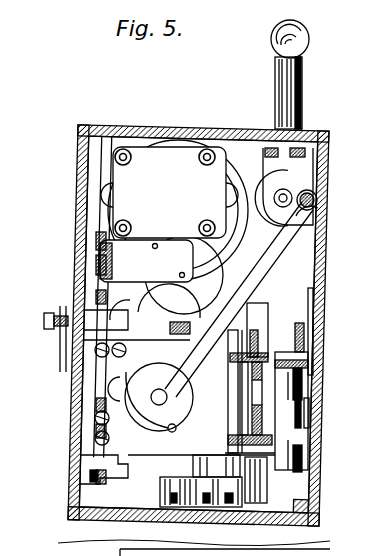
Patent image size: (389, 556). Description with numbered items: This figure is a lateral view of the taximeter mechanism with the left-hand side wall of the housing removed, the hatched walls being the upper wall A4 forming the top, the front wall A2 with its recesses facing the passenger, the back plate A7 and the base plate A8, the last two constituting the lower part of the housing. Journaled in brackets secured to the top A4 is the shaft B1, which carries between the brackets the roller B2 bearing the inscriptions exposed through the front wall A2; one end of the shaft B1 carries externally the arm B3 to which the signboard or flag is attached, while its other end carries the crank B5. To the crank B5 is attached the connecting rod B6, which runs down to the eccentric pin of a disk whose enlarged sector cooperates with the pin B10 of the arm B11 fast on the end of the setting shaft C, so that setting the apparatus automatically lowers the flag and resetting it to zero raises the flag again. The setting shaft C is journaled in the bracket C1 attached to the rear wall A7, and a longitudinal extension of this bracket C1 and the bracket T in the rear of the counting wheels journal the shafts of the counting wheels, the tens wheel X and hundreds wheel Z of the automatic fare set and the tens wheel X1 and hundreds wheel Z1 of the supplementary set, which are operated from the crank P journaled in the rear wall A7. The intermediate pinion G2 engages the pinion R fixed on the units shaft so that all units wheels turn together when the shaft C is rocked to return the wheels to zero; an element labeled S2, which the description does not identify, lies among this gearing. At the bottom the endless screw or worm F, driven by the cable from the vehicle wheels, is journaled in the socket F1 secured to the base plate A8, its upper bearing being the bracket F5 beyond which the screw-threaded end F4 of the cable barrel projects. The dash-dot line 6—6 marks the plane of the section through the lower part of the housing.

The upper wall A4 is at (205, 129).
The back plate A7 is at (73, 177).
The front wall A2 is at (325, 245).
The base plate A8 is at (94, 523).
The arm B3 is at (303, 86).
The shaft B1 is at (292, 187).
The crank B5 is at (316, 196).
The roller B2 is at (314, 218).
The connecting rod B6 is at (272, 275).
The screw-threaded end of barrel F4 is at (178, 217).
The bracket F5 is at (186, 338).
The section line 6 is at (162, 216).
The handle or crank P is at (58, 350).
The setting shaft C is at (158, 398).
The arm B11 is at (185, 395).
The pin B10 is at (176, 430).
The bracket C1 is at (141, 448).
The endless screw or worm F is at (192, 460).
The socket F1 is at (199, 478).
The pinion R is at (243, 455).
The spring housing S2 is at (252, 336).
The bracket T is at (272, 392).
The intermediate pinion G2 is at (270, 405).
The counting wheel Z1 is at (303, 330).
The counting wheel X1 is at (303, 341).
The counting wheel Z is at (305, 406).
The counting wheel X is at (304, 421).